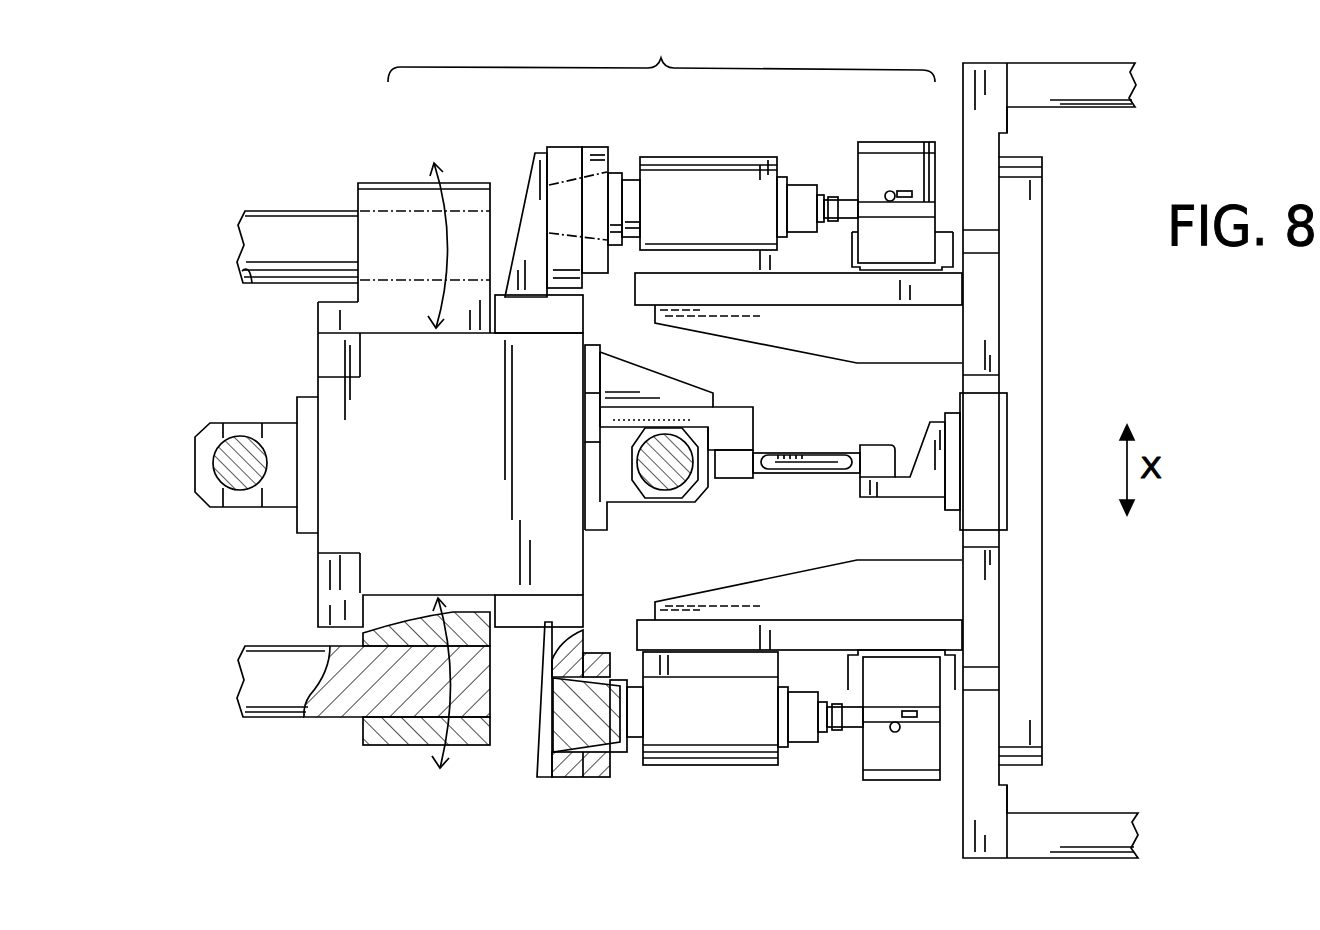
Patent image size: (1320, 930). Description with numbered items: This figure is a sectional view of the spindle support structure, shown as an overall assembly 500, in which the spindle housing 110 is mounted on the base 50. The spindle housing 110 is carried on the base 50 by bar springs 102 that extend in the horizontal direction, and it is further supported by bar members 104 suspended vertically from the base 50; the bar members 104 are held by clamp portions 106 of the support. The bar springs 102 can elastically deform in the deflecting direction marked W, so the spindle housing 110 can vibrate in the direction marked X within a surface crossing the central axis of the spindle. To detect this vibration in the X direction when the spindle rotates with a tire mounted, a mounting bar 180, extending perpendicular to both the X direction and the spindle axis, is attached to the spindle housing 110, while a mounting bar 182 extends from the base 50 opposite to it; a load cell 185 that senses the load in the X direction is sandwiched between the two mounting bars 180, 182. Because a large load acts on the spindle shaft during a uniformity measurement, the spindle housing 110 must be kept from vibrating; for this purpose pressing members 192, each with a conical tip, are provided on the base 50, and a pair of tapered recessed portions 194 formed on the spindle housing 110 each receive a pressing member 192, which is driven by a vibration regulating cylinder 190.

The clamping and drive assembly 500 is at (690, 50).
The base 50 is at (967, 108).
The spindle housing 110 is at (393, 350).
The bar springs 102 is at (306, 232).
The bar members 104 is at (240, 457).
The clamp 106 is at (282, 493).
The mounting bar 180 is at (728, 417).
The mounting bar 182 is at (907, 487).
The load cell 185 is at (813, 455).
The vibration regulating cylinder 190 is at (892, 162).
The pressing member 192 is at (594, 193).
The tapered recessed portions 194 is at (562, 160).